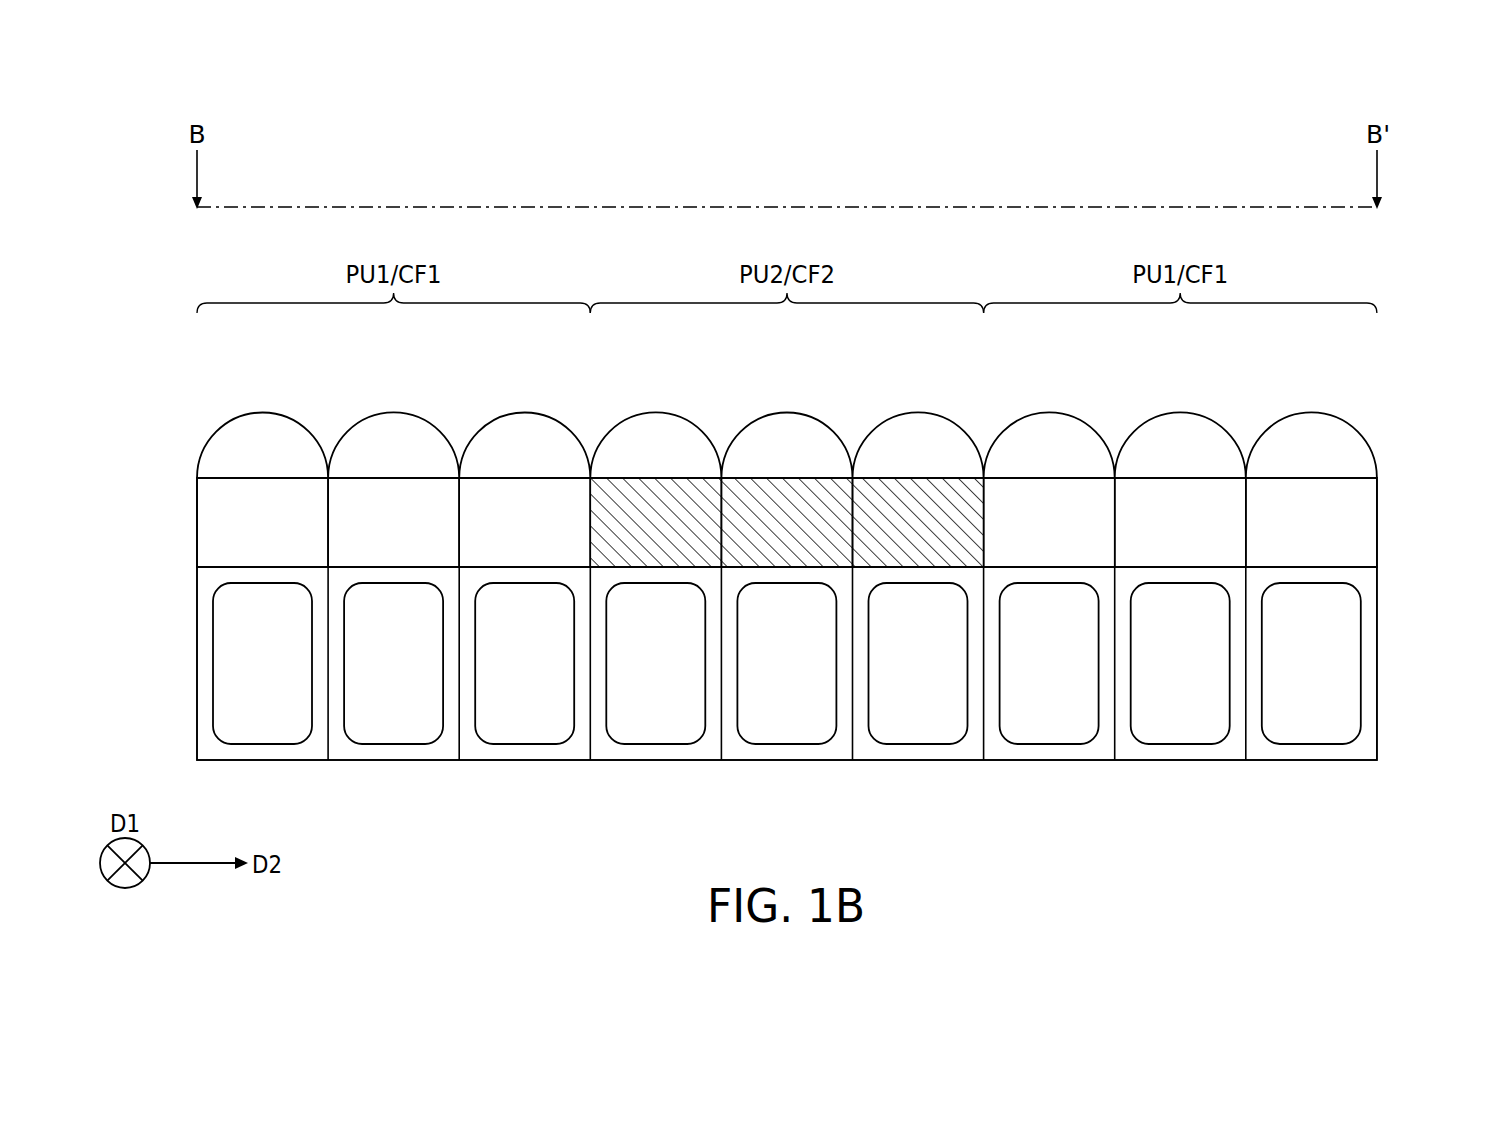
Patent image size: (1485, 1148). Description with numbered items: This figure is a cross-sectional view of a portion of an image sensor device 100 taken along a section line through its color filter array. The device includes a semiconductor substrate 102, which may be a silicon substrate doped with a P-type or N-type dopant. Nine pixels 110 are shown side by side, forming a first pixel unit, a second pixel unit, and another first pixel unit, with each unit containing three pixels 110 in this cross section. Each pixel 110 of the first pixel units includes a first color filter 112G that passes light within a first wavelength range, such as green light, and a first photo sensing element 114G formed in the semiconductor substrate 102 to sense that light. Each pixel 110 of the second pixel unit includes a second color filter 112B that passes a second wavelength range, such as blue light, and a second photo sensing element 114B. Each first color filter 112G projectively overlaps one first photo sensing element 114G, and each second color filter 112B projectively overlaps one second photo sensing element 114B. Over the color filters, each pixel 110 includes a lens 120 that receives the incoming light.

The image sensor device 100 is at (1426, 104).
The semiconductor substrate 102 is at (191, 567).
The pixel 110 is at (787, 403).
The first color filter 112G is at (234, 539).
The second color filter 112B is at (627, 539).
The first photo sensing element 114G is at (234, 682).
The second photo sensing element 114B is at (627, 682).
The lens 120 is at (212, 461).